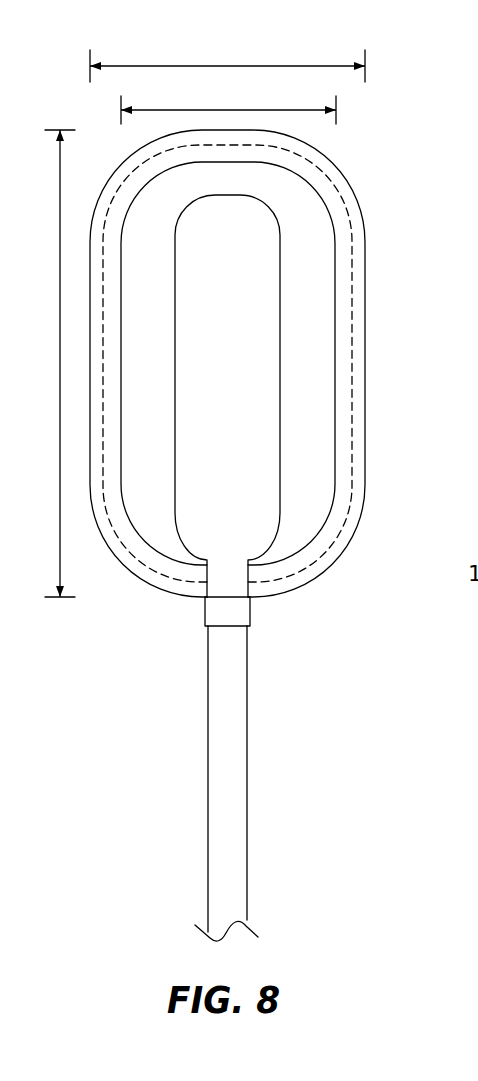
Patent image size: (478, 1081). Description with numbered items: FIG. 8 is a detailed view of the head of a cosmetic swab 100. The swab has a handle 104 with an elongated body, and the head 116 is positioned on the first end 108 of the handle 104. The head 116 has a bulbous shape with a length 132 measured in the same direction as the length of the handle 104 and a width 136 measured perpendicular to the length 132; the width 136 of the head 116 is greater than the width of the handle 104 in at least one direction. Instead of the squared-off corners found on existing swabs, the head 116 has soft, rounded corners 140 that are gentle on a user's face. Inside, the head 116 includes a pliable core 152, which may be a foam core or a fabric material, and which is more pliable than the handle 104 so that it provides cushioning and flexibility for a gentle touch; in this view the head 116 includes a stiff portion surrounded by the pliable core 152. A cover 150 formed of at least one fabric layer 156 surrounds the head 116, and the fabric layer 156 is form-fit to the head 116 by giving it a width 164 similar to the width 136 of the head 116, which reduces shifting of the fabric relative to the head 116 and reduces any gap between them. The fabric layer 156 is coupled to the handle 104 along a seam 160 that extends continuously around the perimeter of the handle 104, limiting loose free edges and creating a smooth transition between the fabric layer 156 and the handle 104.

The cosmetic swab 100 is at (376, 118).
The handle 104 is at (230, 876).
The first end 108 is at (194, 632).
The head 116 is at (378, 382).
The length 132 is at (60, 340).
The width 136 is at (225, 109).
The rounded corners 140 is at (263, 202).
The cover 150 is at (357, 207).
The pliable core 152 is at (307, 318).
The fabric layer 156 is at (330, 542).
The seam 160 is at (233, 615).
The width 164 is at (225, 65).